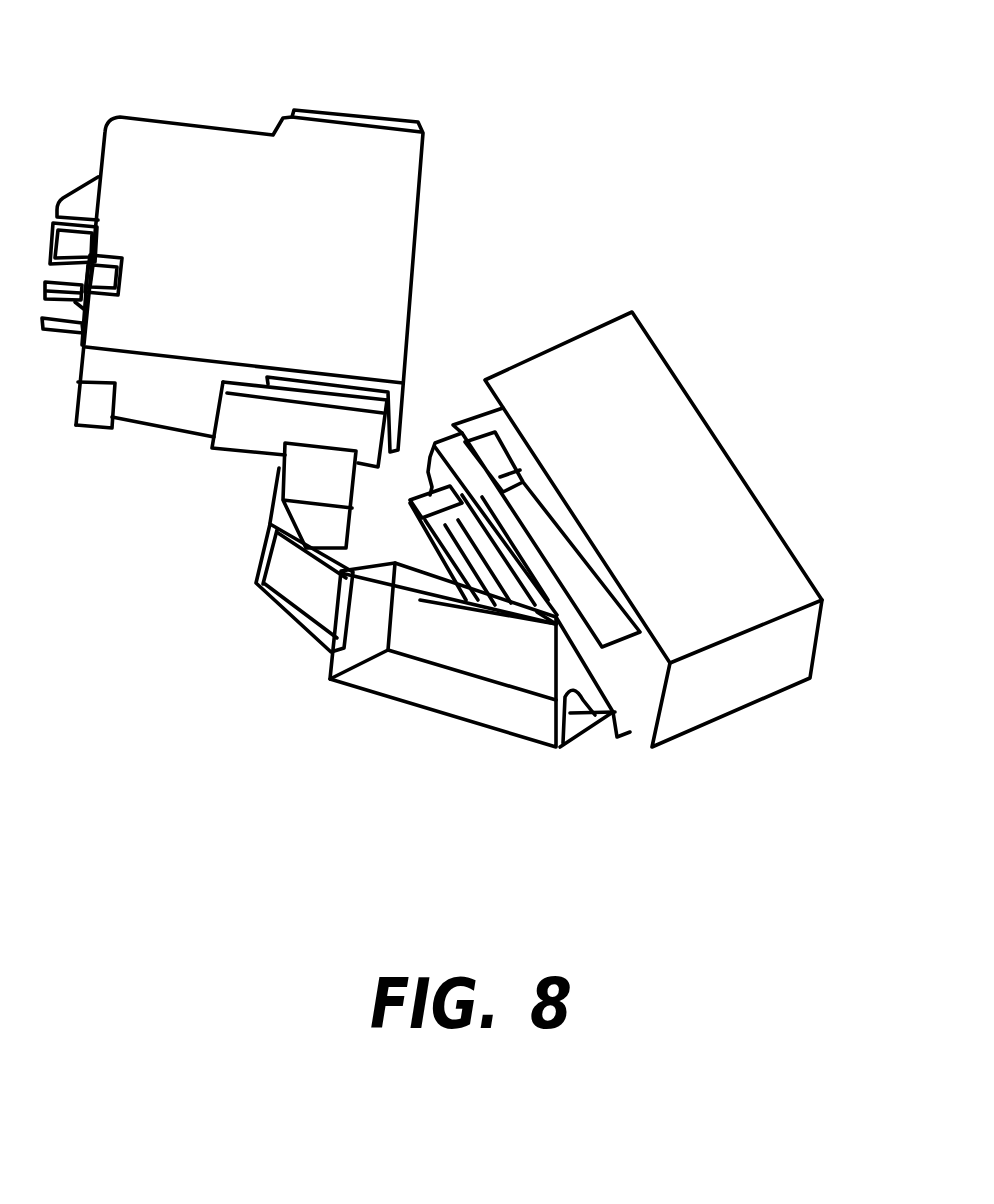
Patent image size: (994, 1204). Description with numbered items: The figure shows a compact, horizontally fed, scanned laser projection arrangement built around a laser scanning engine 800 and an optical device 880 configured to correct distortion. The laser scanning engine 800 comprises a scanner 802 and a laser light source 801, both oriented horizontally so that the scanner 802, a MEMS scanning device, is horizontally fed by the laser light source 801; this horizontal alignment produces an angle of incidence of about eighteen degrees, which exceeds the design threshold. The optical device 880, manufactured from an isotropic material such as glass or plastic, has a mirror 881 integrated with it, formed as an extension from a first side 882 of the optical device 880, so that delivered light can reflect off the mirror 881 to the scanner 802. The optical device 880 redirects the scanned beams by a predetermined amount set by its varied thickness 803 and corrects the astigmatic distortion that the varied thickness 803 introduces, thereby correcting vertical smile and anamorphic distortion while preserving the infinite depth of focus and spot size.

The laser scanning engine 800 is at (552, 236).
The laser light source 801 is at (253, 183).
The scanner 802 is at (645, 470).
The varied thickness 803 is at (429, 584).
The optical device 880 is at (402, 717).
The mirror 881 is at (298, 582).
The first side 882 is at (328, 665).